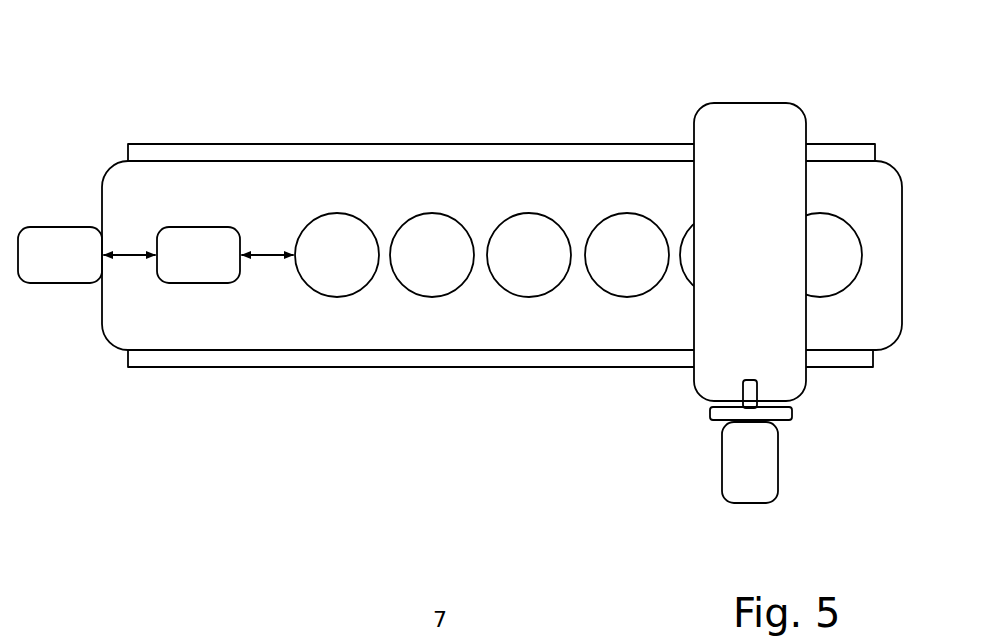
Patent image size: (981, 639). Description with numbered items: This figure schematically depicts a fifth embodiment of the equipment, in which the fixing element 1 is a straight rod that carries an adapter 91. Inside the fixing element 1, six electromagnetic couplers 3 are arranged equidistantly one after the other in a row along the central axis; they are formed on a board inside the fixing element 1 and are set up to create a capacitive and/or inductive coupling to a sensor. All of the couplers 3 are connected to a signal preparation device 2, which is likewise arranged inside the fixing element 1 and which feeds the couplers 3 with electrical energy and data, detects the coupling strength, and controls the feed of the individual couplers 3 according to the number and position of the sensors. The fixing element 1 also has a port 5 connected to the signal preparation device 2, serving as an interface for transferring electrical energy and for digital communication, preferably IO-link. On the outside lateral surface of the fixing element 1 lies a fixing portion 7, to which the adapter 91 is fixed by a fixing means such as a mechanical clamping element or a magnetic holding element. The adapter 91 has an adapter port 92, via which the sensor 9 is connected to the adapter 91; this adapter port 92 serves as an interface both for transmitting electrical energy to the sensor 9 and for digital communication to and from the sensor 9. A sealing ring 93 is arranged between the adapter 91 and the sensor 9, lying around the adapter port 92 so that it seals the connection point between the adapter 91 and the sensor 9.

The fixing element 1 is at (99, 156).
The signal preparation device 2 is at (210, 228).
The electromagnetic couplers 3 is at (828, 214).
The port 5 is at (63, 283).
The fixing portion 7 is at (877, 364).
The sensor 9 is at (778, 475).
The adapter 91 is at (803, 397).
The adapter port 92 is at (742, 392).
The sealing ring 93 is at (708, 414).